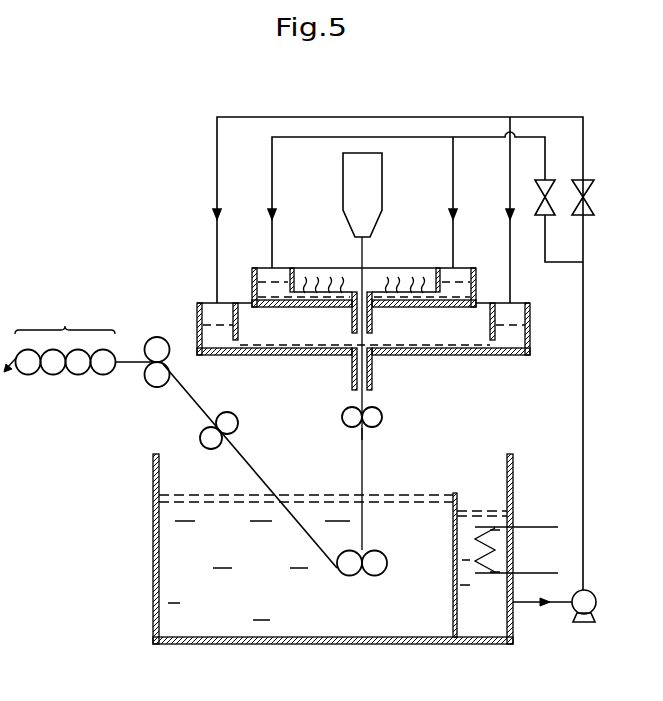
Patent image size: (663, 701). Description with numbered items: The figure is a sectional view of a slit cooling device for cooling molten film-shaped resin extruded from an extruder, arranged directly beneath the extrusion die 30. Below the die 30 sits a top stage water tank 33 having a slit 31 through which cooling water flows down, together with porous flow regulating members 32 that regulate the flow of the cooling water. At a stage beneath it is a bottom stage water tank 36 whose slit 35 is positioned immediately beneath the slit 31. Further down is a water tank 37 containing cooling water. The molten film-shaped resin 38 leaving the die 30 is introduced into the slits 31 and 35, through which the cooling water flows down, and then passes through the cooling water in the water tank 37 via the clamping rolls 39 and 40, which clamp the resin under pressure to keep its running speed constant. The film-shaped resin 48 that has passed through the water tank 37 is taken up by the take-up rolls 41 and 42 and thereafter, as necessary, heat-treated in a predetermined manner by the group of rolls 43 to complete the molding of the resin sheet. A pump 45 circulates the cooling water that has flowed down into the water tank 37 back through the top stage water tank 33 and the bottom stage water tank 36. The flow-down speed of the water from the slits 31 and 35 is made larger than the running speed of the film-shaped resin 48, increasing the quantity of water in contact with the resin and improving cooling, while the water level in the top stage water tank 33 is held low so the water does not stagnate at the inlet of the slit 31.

The die 30 is at (342, 180).
The slit 31 is at (378, 322).
The porous flow regulating members 32 is at (306, 287).
The top stage water tank 33 is at (478, 282).
The slit 35 is at (376, 383).
The bottom stage water tank 36 is at (533, 318).
The water tank 37 is at (152, 580).
The molten film-shaped resin 38 is at (375, 405).
The clamping roll 39 is at (342, 416).
The clamping roll 40 is at (344, 576).
The take-up roll 41 is at (238, 421).
The take-up roll 42 is at (157, 387).
The group of rolls 43 is at (78, 337).
The pump 45 is at (578, 623).
The film-shaped resin 48 is at (363, 440).